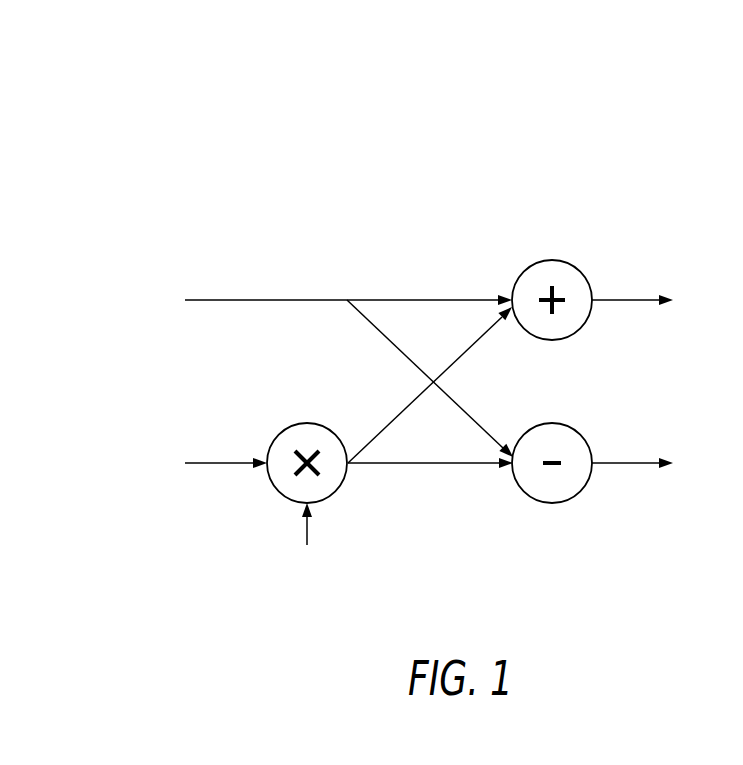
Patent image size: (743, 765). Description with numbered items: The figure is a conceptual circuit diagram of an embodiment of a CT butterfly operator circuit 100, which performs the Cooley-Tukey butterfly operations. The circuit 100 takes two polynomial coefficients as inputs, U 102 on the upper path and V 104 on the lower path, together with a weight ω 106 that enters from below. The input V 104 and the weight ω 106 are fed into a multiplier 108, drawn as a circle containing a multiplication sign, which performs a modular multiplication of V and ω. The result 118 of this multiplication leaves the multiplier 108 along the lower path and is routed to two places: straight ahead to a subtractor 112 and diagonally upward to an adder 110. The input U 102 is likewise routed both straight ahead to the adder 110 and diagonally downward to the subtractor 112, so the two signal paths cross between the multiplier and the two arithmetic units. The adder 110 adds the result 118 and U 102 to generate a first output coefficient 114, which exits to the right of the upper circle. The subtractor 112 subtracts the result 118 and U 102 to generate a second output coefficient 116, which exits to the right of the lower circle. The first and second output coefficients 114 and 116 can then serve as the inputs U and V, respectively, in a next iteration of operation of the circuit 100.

The CT butterfly operator circuit 100 is at (628, 127).
The input U 102 is at (215, 300).
The input V 104 is at (197, 458).
The weight ω 106 is at (307, 522).
The multiplier 108 is at (308, 422).
The adder 110 is at (543, 258).
The subtractor 112 is at (557, 427).
The first output coefficient 114 is at (633, 300).
The second output coefficient 116 is at (627, 463).
The result of the multiplication 118 is at (400, 462).